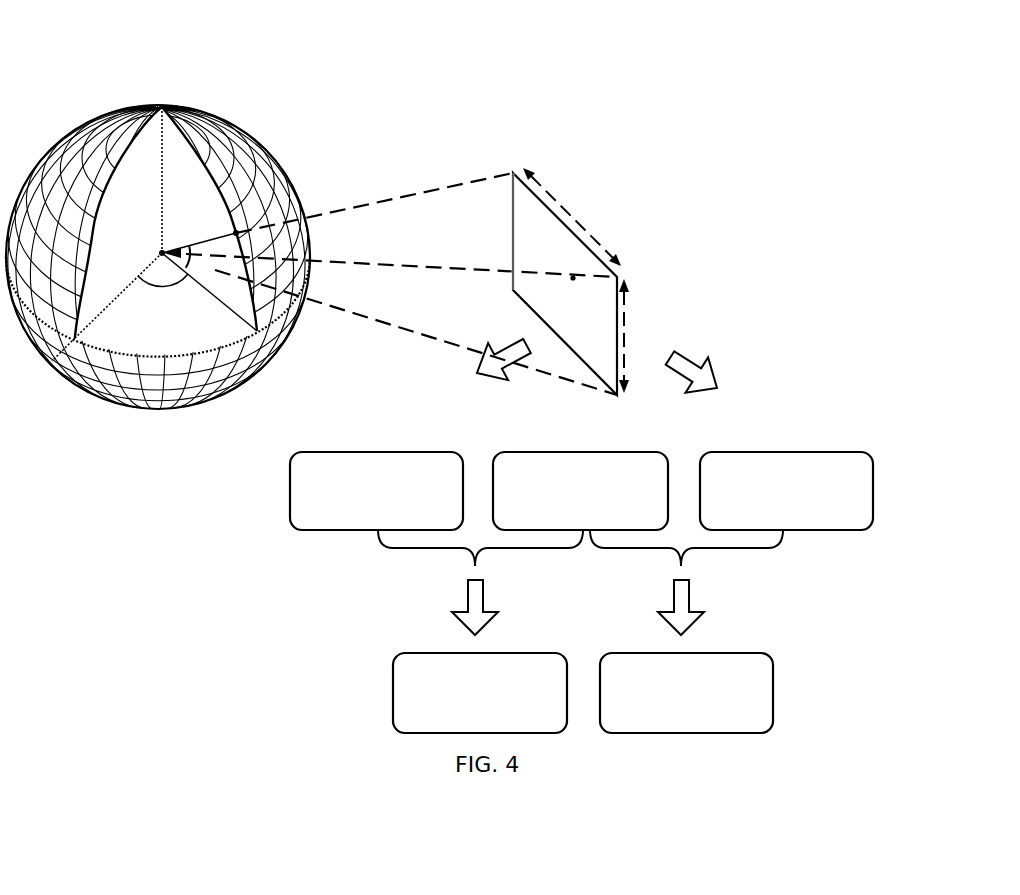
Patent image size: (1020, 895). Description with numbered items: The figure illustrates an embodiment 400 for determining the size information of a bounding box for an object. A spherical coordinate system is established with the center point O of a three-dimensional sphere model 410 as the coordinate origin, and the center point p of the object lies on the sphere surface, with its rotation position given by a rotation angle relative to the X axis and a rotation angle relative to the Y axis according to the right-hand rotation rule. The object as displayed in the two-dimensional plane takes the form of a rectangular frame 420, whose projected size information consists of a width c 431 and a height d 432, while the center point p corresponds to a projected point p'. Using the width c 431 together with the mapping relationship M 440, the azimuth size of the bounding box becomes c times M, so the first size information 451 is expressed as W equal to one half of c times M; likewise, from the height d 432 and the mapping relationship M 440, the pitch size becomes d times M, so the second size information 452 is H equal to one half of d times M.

The embodiment 400 is at (74, 26).
The three-dimensional sphere model 410 is at (252, 137).
The rectangular frame 420 is at (543, 197).
The width c 431 is at (402, 452).
The height d 432 is at (812, 452).
The mapping relationship M 440 is at (608, 452).
The first size information 451 is at (508, 653).
The second size information 452 is at (712, 653).